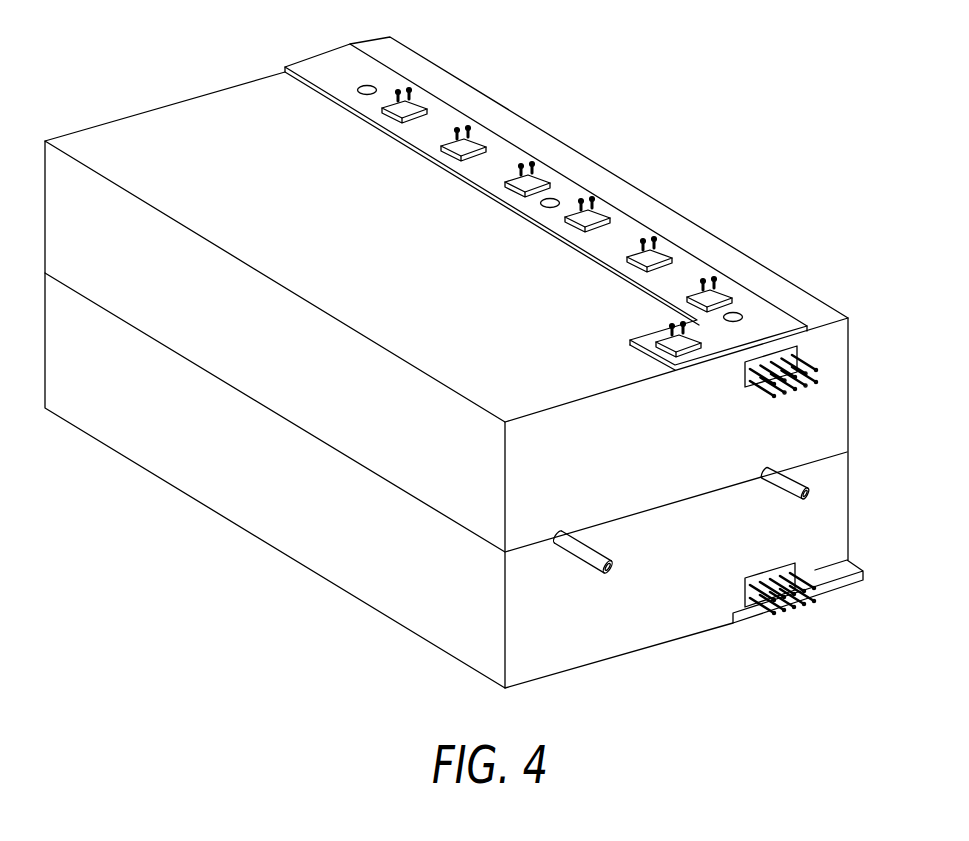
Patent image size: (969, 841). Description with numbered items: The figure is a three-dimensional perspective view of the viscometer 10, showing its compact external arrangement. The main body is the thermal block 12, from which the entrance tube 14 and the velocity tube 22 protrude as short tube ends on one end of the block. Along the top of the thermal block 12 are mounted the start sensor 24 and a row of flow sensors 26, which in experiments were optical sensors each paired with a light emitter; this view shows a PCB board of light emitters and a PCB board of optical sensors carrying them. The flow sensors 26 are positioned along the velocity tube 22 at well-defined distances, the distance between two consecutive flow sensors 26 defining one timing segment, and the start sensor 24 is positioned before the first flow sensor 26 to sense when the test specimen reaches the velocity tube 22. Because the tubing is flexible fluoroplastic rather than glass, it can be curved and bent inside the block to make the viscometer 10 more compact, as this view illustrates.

The viscometer 10 is at (160, 615).
The thermal block 12 is at (190, 117).
The entrance tube 14 is at (775, 490).
The velocity tube 22 is at (577, 558).
The start sensor 24 is at (720, 290).
The flow sensors 26 is at (418, 100).